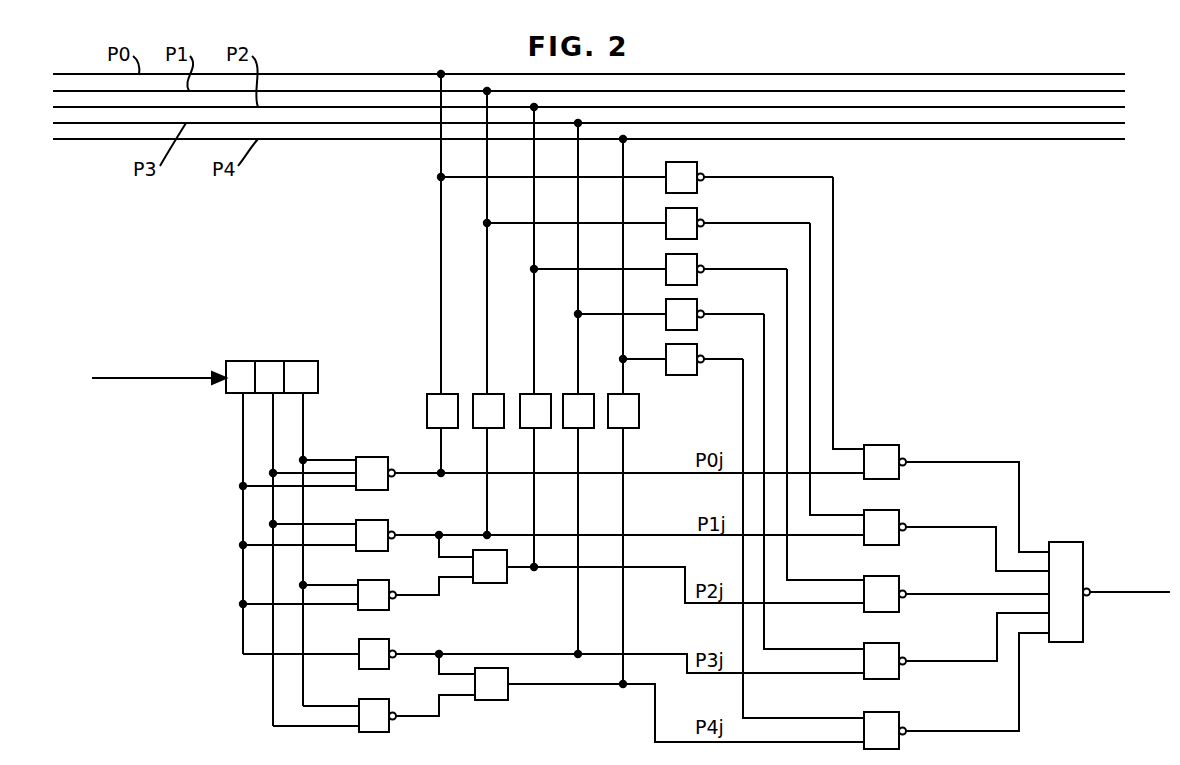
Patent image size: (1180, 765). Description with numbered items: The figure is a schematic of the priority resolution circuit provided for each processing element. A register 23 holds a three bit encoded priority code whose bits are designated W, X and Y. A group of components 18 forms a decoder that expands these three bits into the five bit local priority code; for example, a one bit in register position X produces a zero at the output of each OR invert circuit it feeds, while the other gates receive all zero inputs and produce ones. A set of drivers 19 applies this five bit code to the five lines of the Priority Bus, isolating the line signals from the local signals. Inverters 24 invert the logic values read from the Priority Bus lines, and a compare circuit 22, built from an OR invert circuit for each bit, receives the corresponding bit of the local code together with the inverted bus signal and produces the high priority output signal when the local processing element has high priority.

The group of components forming the local priority code 18 is at (220, 591).
The set of drivers 19 is at (413, 396).
The compare circuit 22 is at (853, 320).
The register 23 is at (318, 386).
The inverters 24 is at (735, 168).